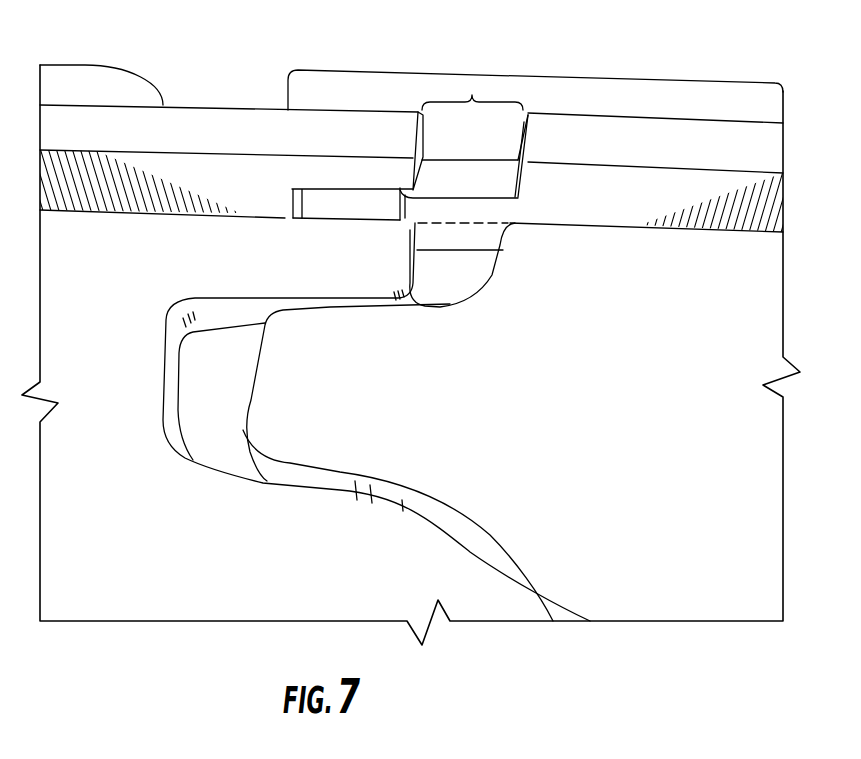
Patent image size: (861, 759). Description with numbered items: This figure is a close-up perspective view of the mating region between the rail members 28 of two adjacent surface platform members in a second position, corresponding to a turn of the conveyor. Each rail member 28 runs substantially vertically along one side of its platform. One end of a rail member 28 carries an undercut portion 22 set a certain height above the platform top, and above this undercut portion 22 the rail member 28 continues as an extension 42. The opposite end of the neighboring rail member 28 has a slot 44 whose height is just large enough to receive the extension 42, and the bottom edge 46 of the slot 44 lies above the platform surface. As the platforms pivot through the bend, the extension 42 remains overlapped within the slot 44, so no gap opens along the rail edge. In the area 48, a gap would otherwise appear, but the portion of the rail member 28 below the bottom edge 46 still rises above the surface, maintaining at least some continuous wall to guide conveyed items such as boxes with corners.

The undercut portion 22 is at (303, 202).
The rail member 28 is at (170, 112).
The extension 42 is at (372, 113).
The slot 44 is at (546, 124).
The bottom edge 46 is at (477, 178).
The area 48 is at (472, 98).